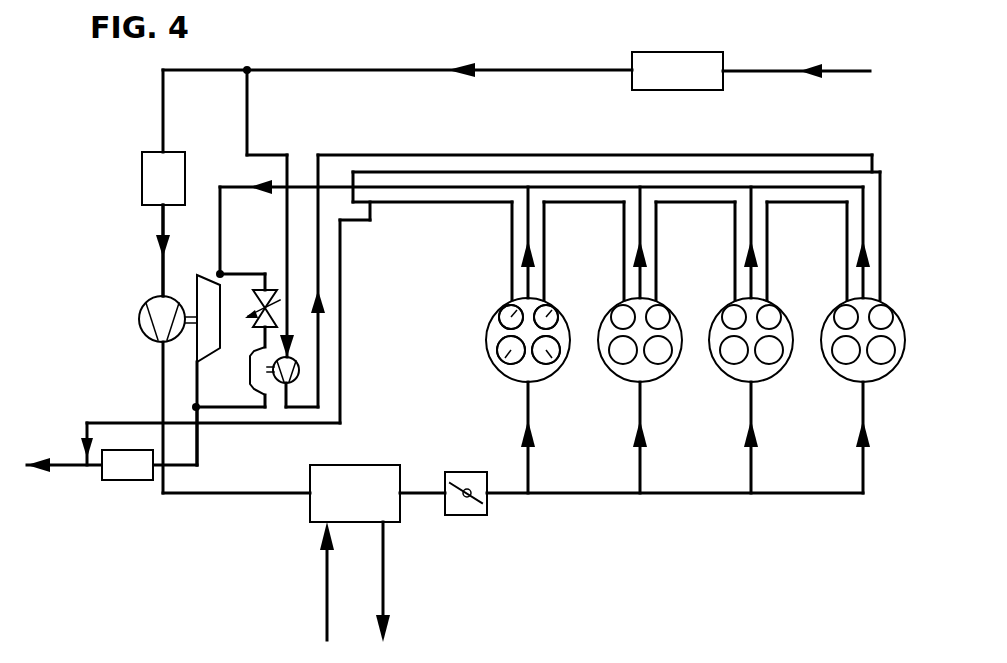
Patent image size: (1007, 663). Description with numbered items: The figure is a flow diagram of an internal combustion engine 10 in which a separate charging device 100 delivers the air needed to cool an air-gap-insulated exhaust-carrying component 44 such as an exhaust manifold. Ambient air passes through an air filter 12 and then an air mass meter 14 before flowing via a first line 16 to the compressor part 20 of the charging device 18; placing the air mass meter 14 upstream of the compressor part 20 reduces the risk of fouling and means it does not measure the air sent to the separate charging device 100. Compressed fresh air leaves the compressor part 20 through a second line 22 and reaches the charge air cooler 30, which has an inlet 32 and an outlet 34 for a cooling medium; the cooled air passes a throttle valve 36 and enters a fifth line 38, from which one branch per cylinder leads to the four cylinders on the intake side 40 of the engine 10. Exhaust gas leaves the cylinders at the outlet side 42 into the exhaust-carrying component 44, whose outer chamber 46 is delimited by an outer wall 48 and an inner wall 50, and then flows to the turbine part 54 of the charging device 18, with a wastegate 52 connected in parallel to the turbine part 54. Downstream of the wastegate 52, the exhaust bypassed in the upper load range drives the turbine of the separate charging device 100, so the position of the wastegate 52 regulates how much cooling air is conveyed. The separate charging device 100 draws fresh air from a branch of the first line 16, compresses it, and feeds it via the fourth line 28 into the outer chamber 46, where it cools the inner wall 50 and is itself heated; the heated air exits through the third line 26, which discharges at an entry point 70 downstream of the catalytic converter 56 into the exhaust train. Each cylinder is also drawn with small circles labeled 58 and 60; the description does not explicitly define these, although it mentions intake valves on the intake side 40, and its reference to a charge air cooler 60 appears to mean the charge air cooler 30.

The internal combustion engine 10 is at (880, 394).
The air filter 12 is at (679, 91).
The air mass meter 14 is at (148, 180).
The first line 16 is at (327, 73).
The charging device 18 is at (128, 318).
The compressor part 20 is at (157, 310).
The second line 22 is at (160, 365).
The third line 26 is at (341, 275).
The fourth line 28 is at (320, 364).
The charge air cooler 30 is at (355, 510).
The inlet 32 is at (325, 603).
The outlet 34 is at (388, 603).
The throttle valve 36 is at (467, 508).
The fifth line 38 is at (692, 497).
The intake side 40 is at (708, 443).
The outlet side 42 is at (488, 141).
The exhaust-carrying component 44 is at (815, 165).
The outer chamber 46 is at (745, 184).
The outer wall 48 is at (387, 172).
The inner wall 50 is at (588, 186).
The wastegate 52 is at (258, 288).
The turbine part 54 is at (203, 292).
The catalytic converter 56 is at (128, 473).
The exhaust valve 58 is at (501, 372).
The charge air cooler 60 is at (505, 300).
The entry point 70 is at (87, 482).
The separate charging device 100 is at (273, 400).